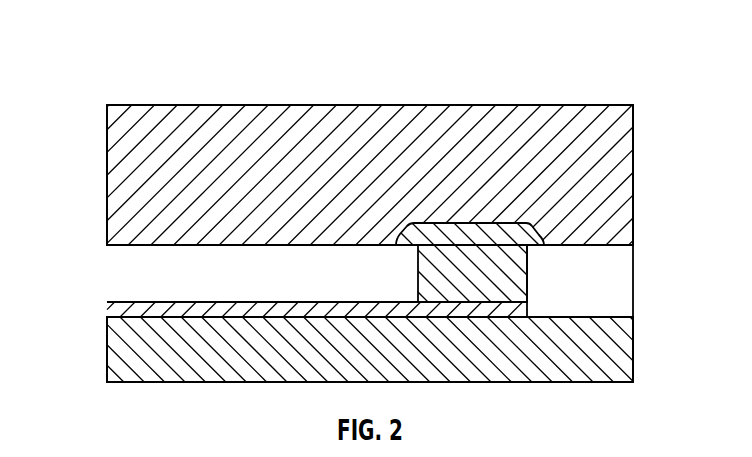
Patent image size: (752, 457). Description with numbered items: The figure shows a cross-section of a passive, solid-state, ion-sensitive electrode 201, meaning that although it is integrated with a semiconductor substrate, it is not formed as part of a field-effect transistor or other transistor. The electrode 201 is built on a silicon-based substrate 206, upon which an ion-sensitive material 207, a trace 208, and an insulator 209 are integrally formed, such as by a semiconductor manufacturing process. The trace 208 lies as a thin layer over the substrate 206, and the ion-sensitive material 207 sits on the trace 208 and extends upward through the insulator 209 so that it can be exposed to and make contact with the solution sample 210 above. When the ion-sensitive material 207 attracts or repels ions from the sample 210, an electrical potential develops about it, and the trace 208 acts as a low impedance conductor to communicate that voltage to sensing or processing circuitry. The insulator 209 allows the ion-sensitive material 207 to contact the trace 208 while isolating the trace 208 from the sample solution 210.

The passive, solid-state, ion-sensitive electrode 201 is at (136, 48).
The silicon-based substrate 206 is at (623, 343).
The ion-sensitive material 207 is at (480, 223).
The trace 208 is at (112, 309).
The insulator 209 is at (627, 283).
The solution sample 210 is at (624, 185).